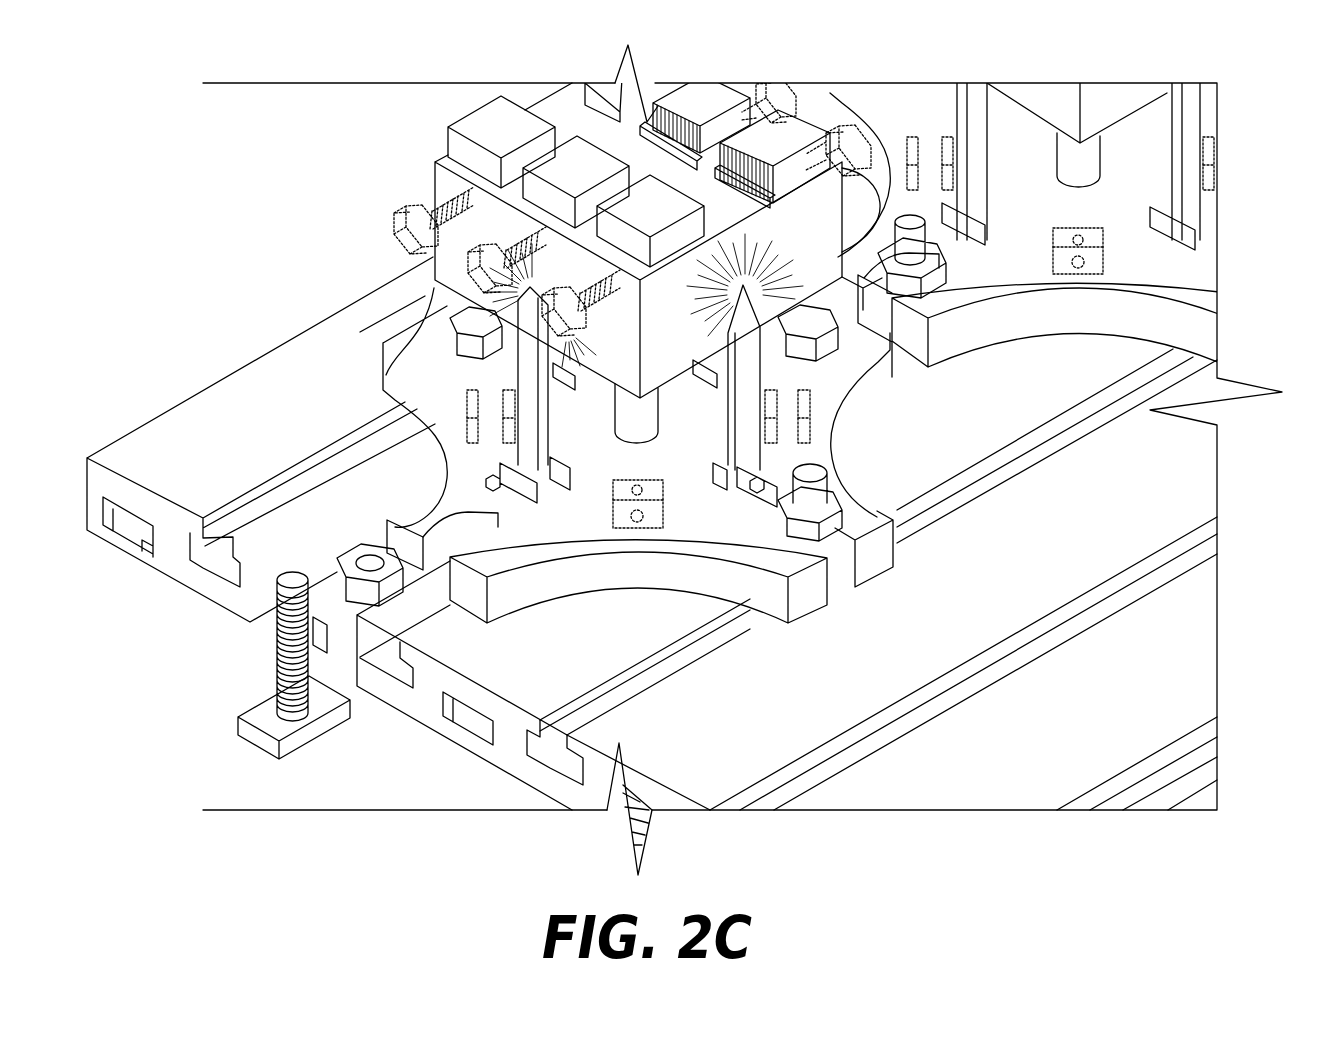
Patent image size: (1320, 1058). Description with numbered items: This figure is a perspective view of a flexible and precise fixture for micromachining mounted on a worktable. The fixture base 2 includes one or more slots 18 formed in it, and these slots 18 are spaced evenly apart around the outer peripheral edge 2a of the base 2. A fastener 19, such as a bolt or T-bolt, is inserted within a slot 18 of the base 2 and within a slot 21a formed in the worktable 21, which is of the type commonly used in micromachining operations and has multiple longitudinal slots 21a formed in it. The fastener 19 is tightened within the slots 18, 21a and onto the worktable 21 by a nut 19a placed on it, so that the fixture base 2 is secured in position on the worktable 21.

The fixture base 2 is at (422, 338).
The outer peripheral edge 2a is at (875, 552).
The slot 18 is at (457, 528).
The fastener 19 is at (820, 492).
The nut 19a is at (357, 588).
The worktable 21 is at (787, 579).
The slot 21a is at (390, 668).